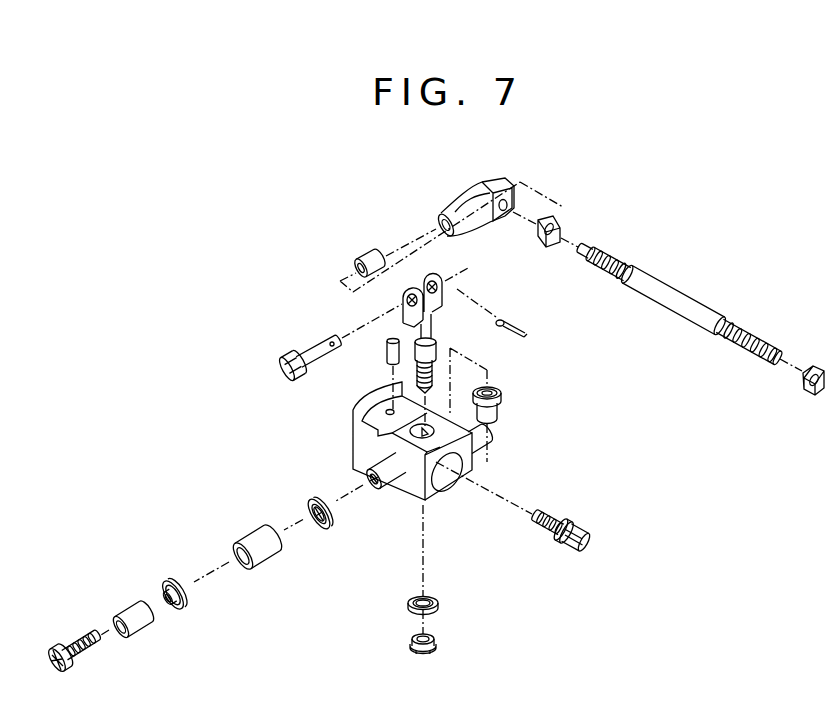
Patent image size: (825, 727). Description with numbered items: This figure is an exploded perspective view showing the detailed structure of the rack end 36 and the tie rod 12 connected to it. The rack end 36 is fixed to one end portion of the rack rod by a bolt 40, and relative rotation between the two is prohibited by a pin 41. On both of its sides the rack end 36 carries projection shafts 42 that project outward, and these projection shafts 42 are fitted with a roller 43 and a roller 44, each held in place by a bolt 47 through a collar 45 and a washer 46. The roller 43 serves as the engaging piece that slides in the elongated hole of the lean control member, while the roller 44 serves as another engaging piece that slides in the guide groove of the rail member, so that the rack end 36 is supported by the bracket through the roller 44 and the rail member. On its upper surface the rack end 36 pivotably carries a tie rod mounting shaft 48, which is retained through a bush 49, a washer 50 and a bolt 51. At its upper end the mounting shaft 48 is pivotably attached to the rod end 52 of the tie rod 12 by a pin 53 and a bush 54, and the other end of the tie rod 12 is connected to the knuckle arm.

The tie rod 12 is at (673, 297).
The rack end 36 is at (357, 431).
The bolt 40 is at (571, 527).
The pin 41 is at (388, 357).
The projection shafts 42 is at (474, 431).
The roller 43 is at (253, 540).
The roller 44 is at (137, 605).
The collar 45 is at (331, 528).
The washer 46 is at (182, 607).
The bolt 47 is at (88, 659).
The tie rod mounting shaft 48 is at (432, 330).
The bush 49 is at (498, 420).
The washer 50 is at (439, 604).
The bolt 51 is at (446, 643).
The rod end 52 is at (478, 187).
The pin 53 is at (313, 353).
The bush 54 is at (366, 255).